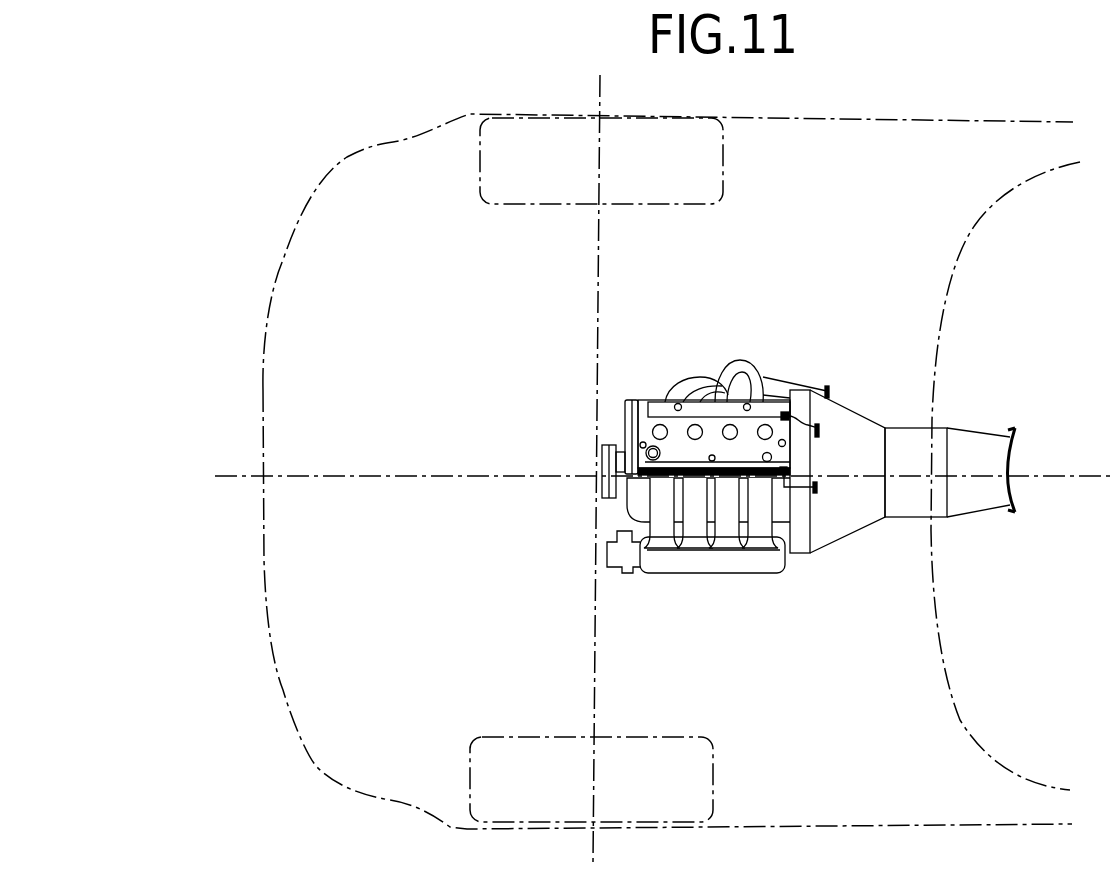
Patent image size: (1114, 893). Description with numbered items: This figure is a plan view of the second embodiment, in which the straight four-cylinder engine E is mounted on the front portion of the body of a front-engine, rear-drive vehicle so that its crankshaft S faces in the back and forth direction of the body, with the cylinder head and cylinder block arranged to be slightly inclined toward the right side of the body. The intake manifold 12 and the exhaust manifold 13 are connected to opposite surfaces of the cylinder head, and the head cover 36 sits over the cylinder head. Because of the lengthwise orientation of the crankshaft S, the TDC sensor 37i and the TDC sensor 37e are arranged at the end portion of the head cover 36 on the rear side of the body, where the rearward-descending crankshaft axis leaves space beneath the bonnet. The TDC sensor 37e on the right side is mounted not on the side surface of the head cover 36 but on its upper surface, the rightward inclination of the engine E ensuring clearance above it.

The engine E is at (637, 390).
The crankshaft S is at (625, 440).
The intake manifold 12 is at (708, 584).
The exhaust manifold 13 is at (716, 364).
The head cover 36 is at (678, 427).
The TDC sensor 37e is at (789, 415).
The TDC sensor 37i is at (790, 470).